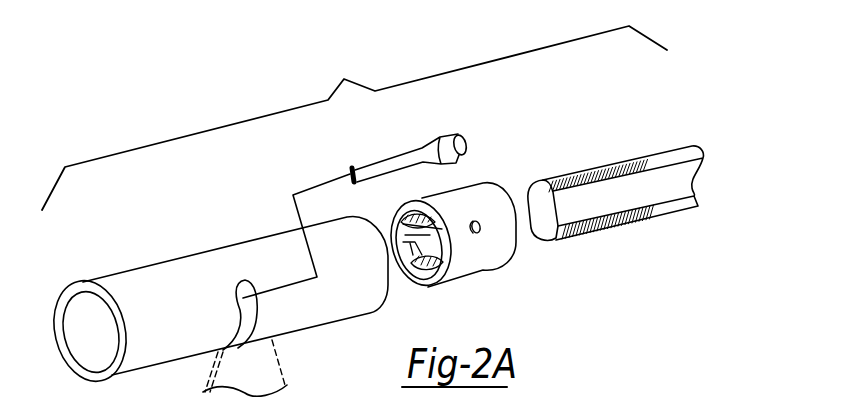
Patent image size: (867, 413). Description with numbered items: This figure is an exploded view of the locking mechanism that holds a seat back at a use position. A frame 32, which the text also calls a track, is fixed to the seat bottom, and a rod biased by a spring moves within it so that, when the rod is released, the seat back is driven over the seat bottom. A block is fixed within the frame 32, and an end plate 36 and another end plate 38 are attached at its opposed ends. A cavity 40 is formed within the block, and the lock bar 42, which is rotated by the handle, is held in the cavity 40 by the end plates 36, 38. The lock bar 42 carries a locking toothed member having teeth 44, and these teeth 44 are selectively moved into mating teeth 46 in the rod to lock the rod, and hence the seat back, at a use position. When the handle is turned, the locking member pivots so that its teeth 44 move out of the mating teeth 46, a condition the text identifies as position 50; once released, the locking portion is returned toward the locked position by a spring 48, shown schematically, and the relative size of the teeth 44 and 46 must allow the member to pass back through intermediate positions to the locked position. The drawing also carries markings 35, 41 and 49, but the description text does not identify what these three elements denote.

The frame 32 is at (548, 196).
The housing 35 is at (354, 118).
The end plate 36 is at (183, 270).
The end plate 38 is at (472, 267).
The cavity 40 is at (410, 158).
The wire 41 is at (353, 172).
The lock bar 42 is at (600, 174).
The teeth 44 is at (527, 203).
The mating teeth 46 is at (430, 244).
The spring 48 is at (397, 225).
The hole 49 is at (477, 221).
The released position 50 is at (246, 280).